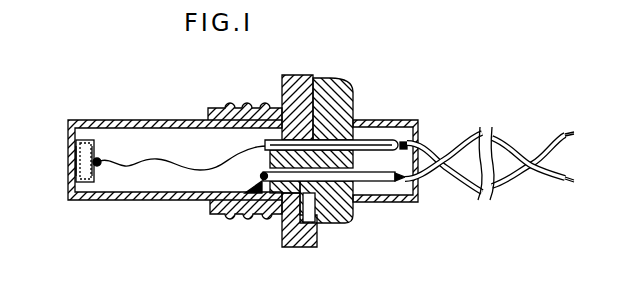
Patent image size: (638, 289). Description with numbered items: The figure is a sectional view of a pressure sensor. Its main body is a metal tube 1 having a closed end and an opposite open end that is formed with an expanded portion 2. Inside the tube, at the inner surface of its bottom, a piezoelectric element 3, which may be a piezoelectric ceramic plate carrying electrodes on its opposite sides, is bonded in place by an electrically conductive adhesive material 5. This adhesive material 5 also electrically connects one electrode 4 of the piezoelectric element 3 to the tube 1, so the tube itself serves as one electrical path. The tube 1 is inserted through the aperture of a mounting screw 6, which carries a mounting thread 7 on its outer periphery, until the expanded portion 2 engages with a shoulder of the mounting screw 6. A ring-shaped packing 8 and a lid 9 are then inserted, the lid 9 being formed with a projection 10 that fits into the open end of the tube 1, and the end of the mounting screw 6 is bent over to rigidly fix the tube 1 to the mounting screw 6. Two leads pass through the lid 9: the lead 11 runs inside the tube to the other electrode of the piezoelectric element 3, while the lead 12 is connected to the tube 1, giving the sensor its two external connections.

The metal tube 1 is at (143, 196).
The expanded portion 2 is at (300, 97).
The piezoelectric element 3 is at (83, 184).
The electrode 4 is at (75, 157).
The electrically conductive adhesive material 5 is at (78, 168).
The mounting screw 6 is at (317, 232).
The mounting thread 7 is at (247, 100).
The ring-shaped packing 8 is at (312, 95).
The lid 9 is at (340, 222).
The projection 10 is at (270, 184).
The lead 11 is at (167, 160).
The lead 12 is at (248, 210).